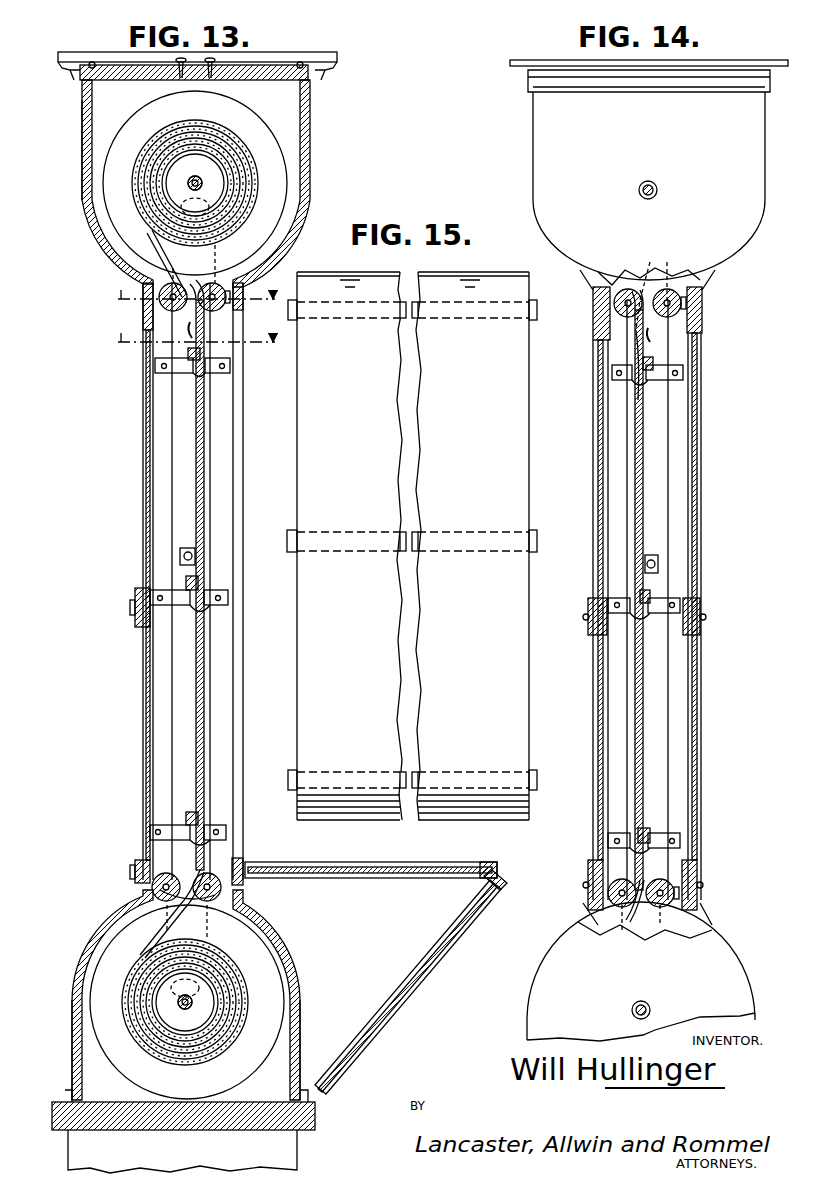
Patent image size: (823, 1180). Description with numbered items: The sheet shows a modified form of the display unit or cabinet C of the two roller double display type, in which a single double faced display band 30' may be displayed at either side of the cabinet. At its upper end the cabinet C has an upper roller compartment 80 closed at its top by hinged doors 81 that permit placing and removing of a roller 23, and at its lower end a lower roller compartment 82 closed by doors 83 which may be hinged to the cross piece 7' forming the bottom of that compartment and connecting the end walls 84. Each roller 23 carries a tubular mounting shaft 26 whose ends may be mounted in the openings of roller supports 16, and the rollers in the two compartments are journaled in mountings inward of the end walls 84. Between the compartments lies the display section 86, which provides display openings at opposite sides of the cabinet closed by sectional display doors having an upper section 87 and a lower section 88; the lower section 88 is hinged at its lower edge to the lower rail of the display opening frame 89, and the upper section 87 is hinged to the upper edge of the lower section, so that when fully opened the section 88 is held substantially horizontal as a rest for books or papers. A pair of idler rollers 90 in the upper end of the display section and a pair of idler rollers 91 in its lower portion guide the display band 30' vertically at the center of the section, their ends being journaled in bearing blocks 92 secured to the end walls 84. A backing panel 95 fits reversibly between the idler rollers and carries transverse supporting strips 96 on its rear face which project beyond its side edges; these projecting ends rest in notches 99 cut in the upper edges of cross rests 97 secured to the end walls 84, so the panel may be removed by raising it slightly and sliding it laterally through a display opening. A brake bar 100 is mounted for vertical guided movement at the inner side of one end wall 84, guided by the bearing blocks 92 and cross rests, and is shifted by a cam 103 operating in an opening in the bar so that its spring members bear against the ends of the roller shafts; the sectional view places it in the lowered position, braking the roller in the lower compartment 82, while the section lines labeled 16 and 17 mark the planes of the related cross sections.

In FIG. 13, the cross piece 7' is at (166, 1123).
In FIG. 13, the roller supports 16 is at (200, 310).
In FIG. 13, the section line 17 is at (200, 353).
In FIG. 13, the rollers 23 is at (125, 157).
In FIG. 14, the rollers 23 is at (655, 272).
In FIG. 13, the tubular mounting shaft 26 is at (203, 187).
In FIG. 14, the tubular mounting shaft 26 is at (658, 190).
In FIG. 13, the display band 30' is at (234, 575).
In FIG. 14, the display band 30' is at (603, 590).
In FIG. 13, the upper roller compartment 80 is at (110, 107).
In FIG. 13, the hinged doors 81 is at (143, 60).
In FIG. 13, the lower roller compartment 82 is at (95, 1068).
In FIG. 13, the doors 83 is at (78, 987).
In FIG. 14, the doors 83 is at (580, 908).
In FIG. 13, the end walls 84 is at (285, 1148).
In FIG. 14, the end walls 84 is at (738, 220).
In FIG. 13, the display section 86 is at (160, 512).
In FIG. 13, the upper display door section 87 is at (143, 450).
In FIG. 14, the upper display door section 87 is at (705, 440).
In FIG. 13, the lower display door section 88 is at (147, 693).
In FIG. 14, the lower display door section 88 is at (598, 745).
In FIG. 13, the display opening frame 89 is at (135, 888).
In FIG. 13, the idler rollers 90 is at (205, 265).
In FIG. 14, the idler rollers 90 is at (703, 305).
In FIG. 13, the idler rollers 91 is at (135, 865).
In FIG. 14, the idler rollers 91 is at (700, 910).
In FIG. 13, the bearing blocks 92 is at (243, 925).
In FIG. 13, the backing panel 95 is at (195, 640).
In FIG. 15, the backing panel 95 is at (530, 716).
In FIG. 14, the backing panel 95 is at (644, 616).
In FIG. 13, the supporting strips 96 is at (200, 590).
In FIG. 15, the supporting strips 96 is at (537, 318).
In FIG. 14, the supporting strips 96 is at (655, 365).
In FIG. 13, the cross rests 97 is at (168, 595).
In FIG. 14, the cross rests 97 is at (680, 375).
In FIG. 13, the notches 99 is at (195, 370).
In FIG. 14, the notches 99 is at (680, 600).
In FIG. 13, the brake bar 100 is at (180, 470).
In FIG. 14, the brake bar 100 is at (655, 478).
In FIG. 13, the cam 103 is at (180, 556).
In FIG. 14, the cam 103 is at (660, 568).
In FIG. 13, the display unit or cabinet C is at (308, 140).
In FIG. 14, the display unit or cabinet C is at (563, 147).